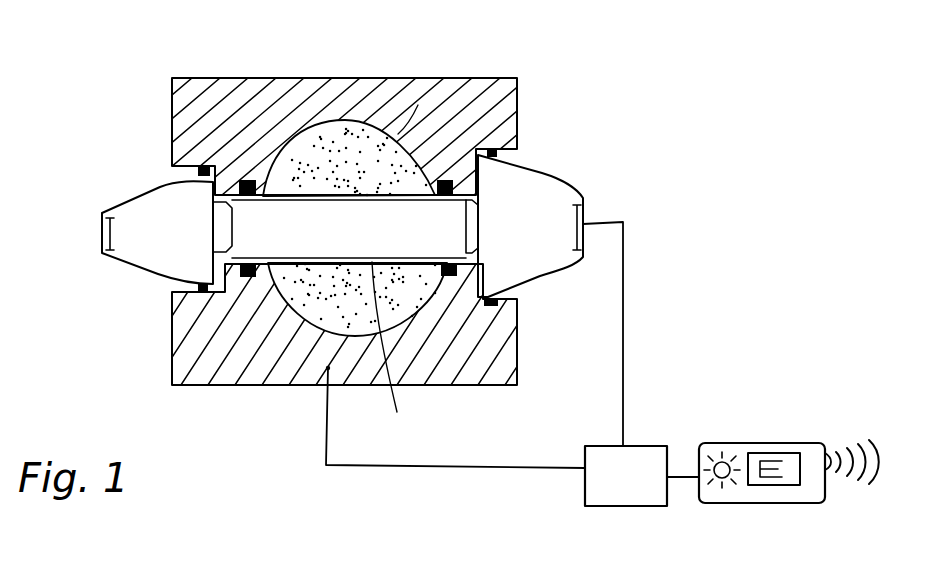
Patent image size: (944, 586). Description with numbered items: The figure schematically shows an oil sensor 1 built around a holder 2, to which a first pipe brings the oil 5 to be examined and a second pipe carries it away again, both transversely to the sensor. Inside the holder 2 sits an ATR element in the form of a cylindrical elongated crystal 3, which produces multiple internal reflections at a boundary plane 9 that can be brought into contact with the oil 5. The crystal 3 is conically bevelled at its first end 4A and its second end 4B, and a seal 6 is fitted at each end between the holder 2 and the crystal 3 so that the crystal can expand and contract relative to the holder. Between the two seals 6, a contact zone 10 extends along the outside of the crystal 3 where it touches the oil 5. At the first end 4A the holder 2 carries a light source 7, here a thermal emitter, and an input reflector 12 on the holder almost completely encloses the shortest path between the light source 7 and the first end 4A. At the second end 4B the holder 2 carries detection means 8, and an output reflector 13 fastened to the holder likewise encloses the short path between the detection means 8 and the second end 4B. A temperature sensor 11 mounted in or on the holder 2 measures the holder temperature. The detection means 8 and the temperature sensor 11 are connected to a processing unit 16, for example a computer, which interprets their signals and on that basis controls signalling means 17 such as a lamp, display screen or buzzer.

The oil sensor 1 is at (156, 66).
The holder 2 is at (243, 96).
The cylindrical elongated crystal 3 is at (276, 212).
The first end 4A is at (225, 238).
The second end 4B is at (470, 230).
The oil to be examined 5 is at (399, 135).
The seal 6 is at (240, 178).
The light source 7 is at (102, 237).
The detection means 8 is at (583, 211).
The boundary plane 9 is at (388, 353).
The contact zone 10 is at (268, 366).
The temperature sensor 11 is at (328, 368).
The input reflector 12 is at (133, 263).
The light receiver housing 13 is at (558, 272).
The processing unit 16 is at (610, 487).
The signalling means 17 is at (732, 492).